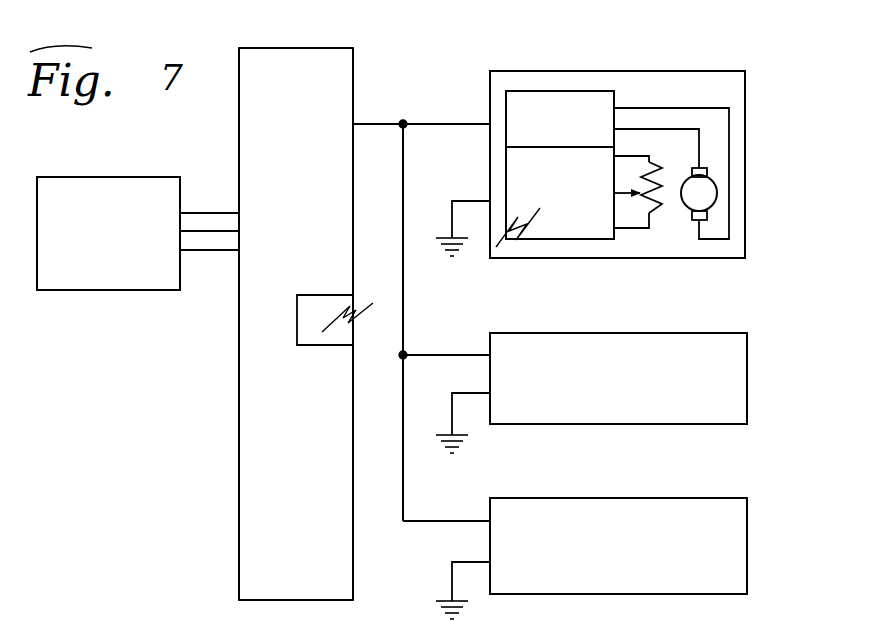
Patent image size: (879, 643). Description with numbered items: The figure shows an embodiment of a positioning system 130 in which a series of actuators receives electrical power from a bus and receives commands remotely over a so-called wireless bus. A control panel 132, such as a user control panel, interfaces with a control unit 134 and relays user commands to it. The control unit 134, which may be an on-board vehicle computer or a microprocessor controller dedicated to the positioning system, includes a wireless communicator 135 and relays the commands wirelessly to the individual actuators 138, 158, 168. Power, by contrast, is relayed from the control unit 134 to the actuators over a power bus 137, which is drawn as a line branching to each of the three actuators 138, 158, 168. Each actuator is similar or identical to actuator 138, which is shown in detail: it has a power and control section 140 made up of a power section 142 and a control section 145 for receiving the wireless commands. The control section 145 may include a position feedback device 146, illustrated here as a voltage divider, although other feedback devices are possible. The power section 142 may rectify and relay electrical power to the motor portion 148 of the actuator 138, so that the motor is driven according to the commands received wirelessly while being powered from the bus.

The control system 130 is at (108, 376).
The control panel 132 is at (134, 177).
The control unit 134 is at (353, 68).
The wireless communicator 135 is at (304, 345).
The power bus 137 is at (456, 106).
The actuator 138 is at (678, 71).
The power and control section 140 is at (572, 91).
The power section 142 is at (573, 129).
The control section 145 is at (572, 198).
The position feedback device 146 is at (658, 213).
The motor portion 148 is at (716, 186).
The actuator 158 is at (540, 333).
The actuator 168 is at (596, 498).